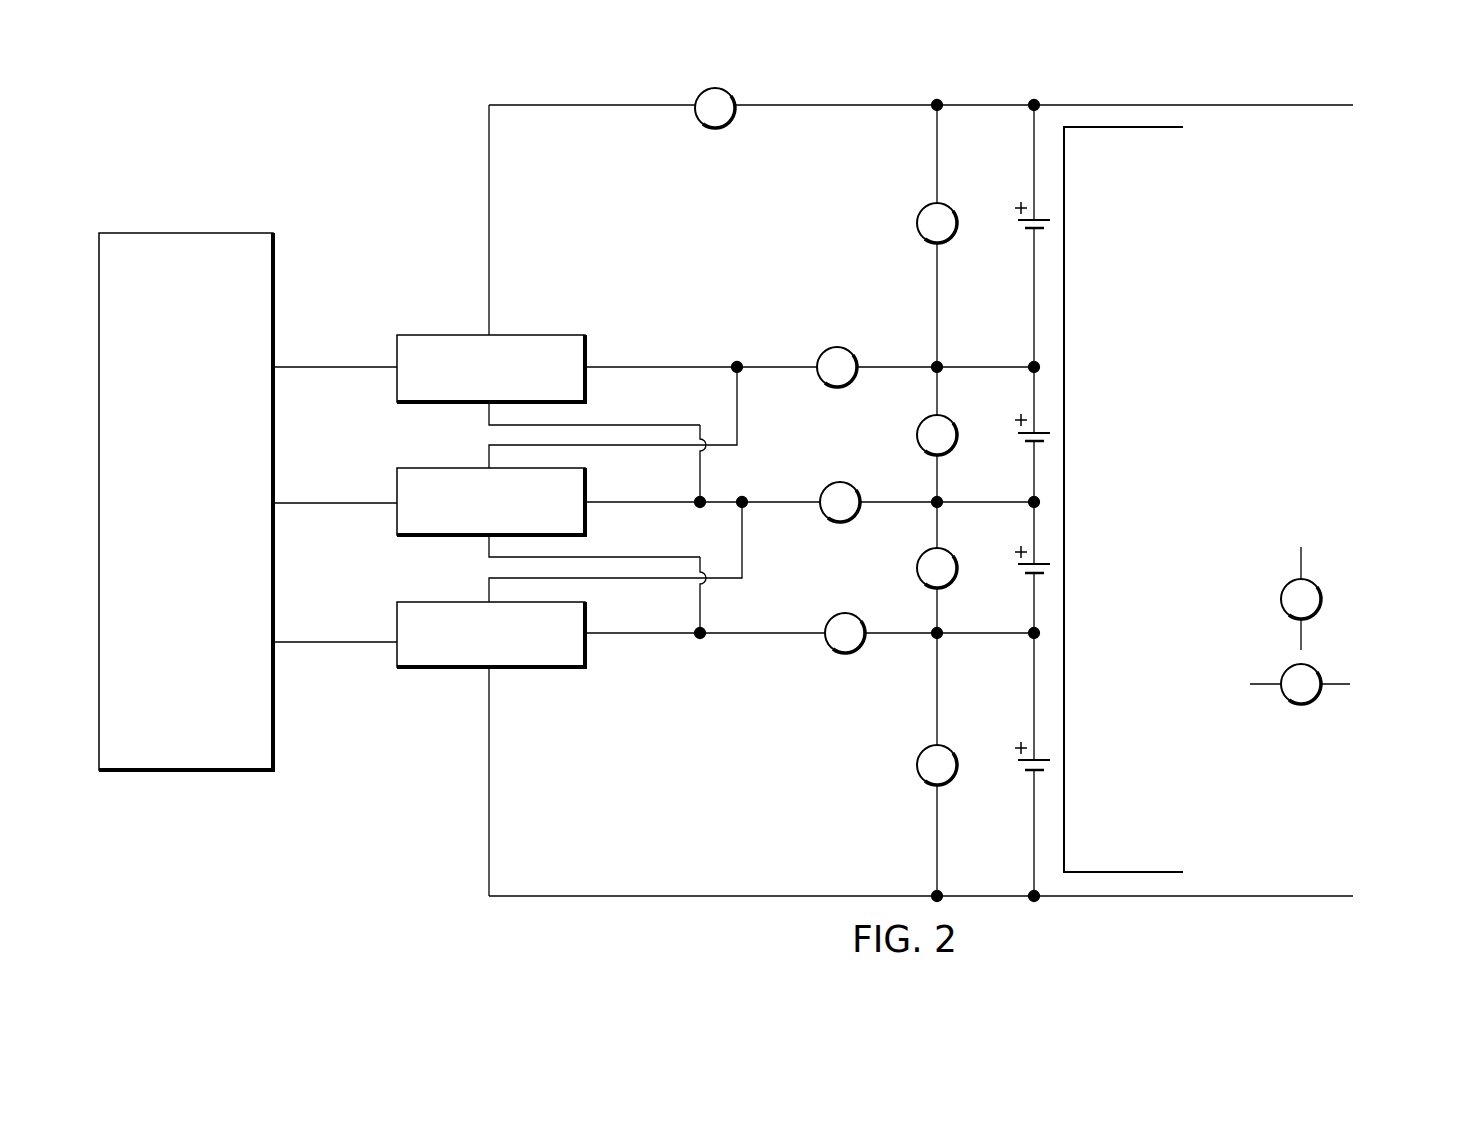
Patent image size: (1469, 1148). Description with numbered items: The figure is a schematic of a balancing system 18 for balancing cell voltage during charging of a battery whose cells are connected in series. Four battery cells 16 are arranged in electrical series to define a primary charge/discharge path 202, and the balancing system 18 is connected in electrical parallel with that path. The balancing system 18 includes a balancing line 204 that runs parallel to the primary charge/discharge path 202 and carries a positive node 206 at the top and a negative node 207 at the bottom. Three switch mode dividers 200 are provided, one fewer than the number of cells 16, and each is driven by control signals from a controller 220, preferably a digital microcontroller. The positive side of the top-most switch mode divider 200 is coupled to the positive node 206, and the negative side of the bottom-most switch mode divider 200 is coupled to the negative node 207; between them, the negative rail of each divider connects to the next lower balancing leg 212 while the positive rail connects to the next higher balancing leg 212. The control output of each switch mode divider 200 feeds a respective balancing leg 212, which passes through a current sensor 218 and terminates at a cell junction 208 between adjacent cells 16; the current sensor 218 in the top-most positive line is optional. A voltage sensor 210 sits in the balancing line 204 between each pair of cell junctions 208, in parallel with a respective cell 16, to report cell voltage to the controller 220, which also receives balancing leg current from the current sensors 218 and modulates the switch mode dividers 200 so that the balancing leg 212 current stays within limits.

The balancing system 18 is at (224, 113).
The controller 220 is at (273, 291).
The switch mode divider 200 is at (397, 390).
The positive node 206 is at (937, 104).
The balancing line 204 is at (936, 160).
The voltage sensor 210 is at (917, 222).
The battery cell 16 is at (1015, 210).
The primary charge/discharge path 202 is at (1033, 300).
The cell junction 208 is at (941, 364).
The current sensor 218 is at (857, 352).
The balancing leg 212 is at (884, 372).
The negative node 207 is at (933, 893).